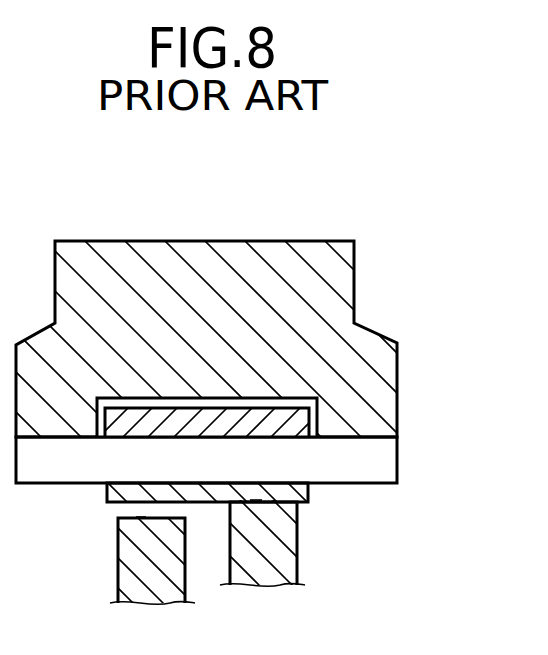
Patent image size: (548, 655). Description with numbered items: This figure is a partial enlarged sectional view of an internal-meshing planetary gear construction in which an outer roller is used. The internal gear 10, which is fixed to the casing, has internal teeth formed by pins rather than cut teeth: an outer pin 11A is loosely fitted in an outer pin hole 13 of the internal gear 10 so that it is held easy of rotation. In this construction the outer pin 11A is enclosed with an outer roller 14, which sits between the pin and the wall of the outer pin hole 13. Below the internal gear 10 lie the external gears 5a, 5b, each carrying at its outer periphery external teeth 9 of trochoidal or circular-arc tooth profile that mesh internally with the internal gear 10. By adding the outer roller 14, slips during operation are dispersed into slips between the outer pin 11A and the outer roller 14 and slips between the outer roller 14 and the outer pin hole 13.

The internal gear 10 is at (339, 282).
The outer pin hole 13 is at (368, 437).
The outer pin 11A is at (388, 469).
The outer roller 14 is at (310, 490).
The external teeth 9 is at (140, 516).
The external gear 5a is at (282, 565).
The external gear 5b is at (130, 582).